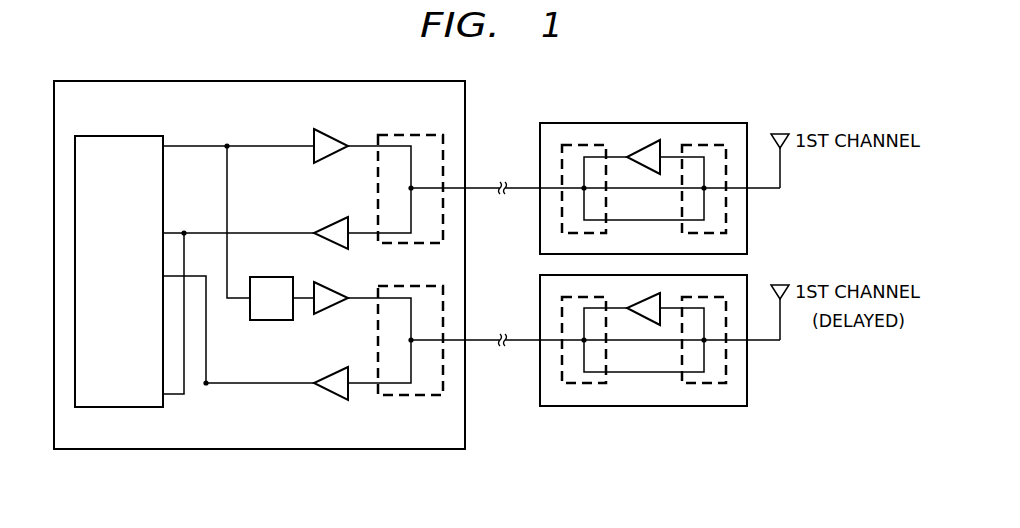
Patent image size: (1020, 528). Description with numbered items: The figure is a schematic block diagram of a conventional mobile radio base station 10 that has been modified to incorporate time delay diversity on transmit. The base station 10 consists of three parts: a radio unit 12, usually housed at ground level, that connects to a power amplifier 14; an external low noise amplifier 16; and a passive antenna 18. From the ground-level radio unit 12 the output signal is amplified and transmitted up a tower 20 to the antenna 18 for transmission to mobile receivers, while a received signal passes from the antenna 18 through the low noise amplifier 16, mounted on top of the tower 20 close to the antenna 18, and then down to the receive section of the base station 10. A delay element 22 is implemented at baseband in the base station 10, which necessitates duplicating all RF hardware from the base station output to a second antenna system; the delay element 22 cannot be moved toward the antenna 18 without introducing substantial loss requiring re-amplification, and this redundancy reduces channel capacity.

The mobile radio base station 10 is at (229, 76).
The radio unit 12 is at (107, 322).
The power amplifier 14 is at (331, 132).
The low noise amplifier 16 is at (642, 172).
The passive antenna 18 is at (783, 131).
The tower 20 is at (706, 114).
The delay element 22 is at (271, 322).